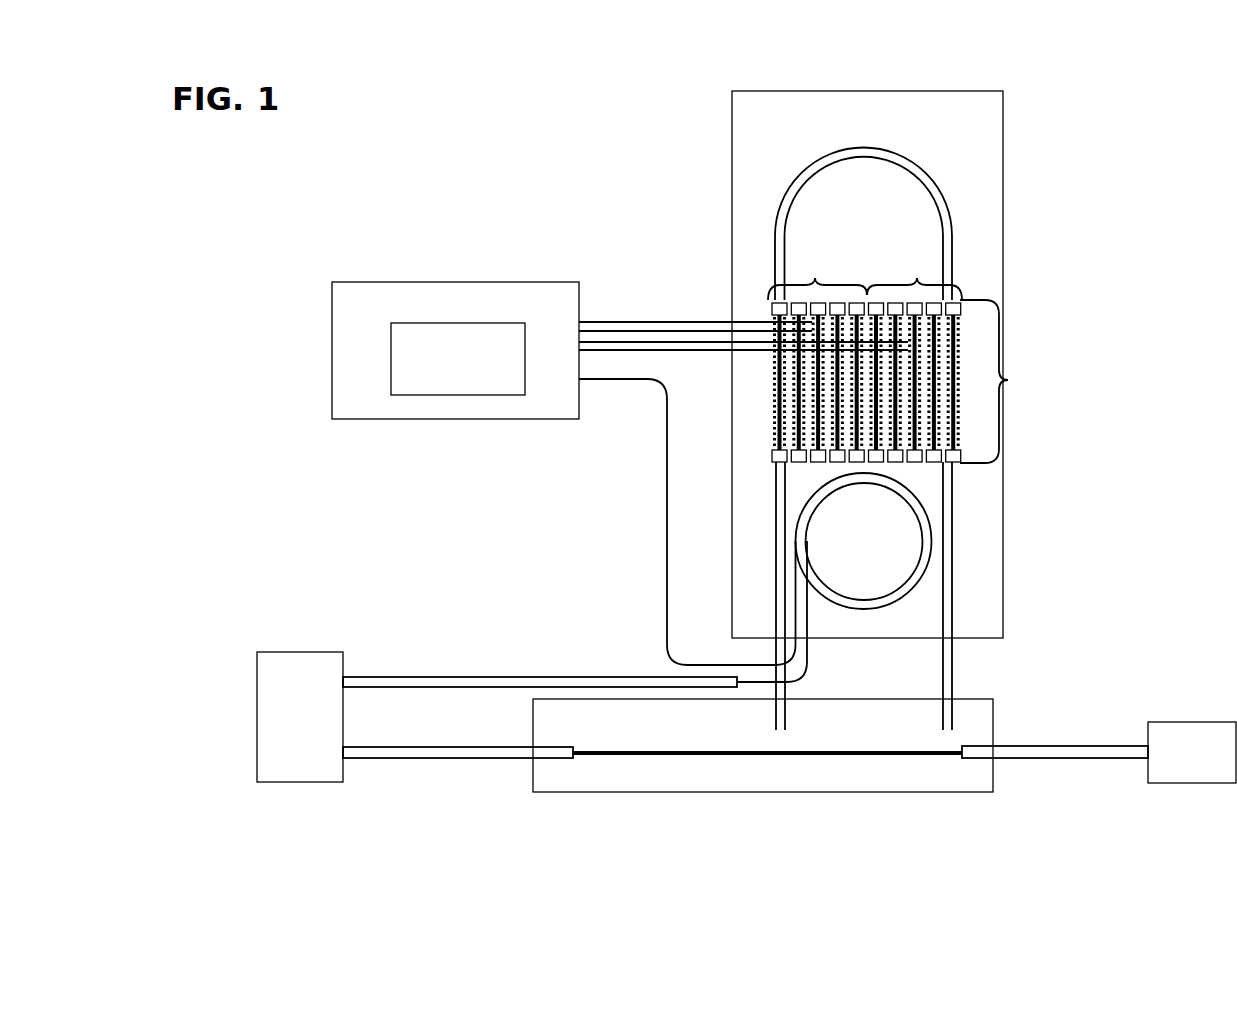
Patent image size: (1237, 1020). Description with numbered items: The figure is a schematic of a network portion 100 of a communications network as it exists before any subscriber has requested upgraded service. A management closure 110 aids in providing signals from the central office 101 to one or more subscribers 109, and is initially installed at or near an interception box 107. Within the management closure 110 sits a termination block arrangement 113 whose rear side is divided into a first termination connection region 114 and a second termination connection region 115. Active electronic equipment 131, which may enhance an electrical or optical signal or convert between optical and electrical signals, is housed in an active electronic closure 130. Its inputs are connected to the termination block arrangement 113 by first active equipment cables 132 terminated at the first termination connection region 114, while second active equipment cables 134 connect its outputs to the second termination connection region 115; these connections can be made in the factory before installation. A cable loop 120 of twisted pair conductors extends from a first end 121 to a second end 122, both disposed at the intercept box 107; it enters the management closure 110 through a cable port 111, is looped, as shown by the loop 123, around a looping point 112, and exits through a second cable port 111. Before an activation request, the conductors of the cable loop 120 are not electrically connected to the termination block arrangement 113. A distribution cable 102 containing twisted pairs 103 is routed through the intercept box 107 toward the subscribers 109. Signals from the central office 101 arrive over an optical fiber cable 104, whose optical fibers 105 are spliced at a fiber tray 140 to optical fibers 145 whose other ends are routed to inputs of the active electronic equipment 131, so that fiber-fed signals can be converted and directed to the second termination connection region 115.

The network portion 100 is at (1143, 343).
The central office 101 is at (277, 732).
The distribution cable 102 is at (1052, 762).
The twisted pairs 103 is at (640, 756).
The optical fiber cable 104 is at (435, 677).
The optical fibers 105 is at (808, 664).
The interception box 107 is at (848, 792).
The subscriber 109 is at (1216, 763).
The management closure 110 is at (731, 142).
The cable port 111 is at (952, 640).
The looping point 112 is at (862, 160).
The termination block arrangement 113 is at (913, 360).
The first termination connection region 114 is at (817, 359).
The second termination connection region 115 is at (914, 359).
The cable loop 120 is at (960, 537).
The first end 121 is at (778, 731).
The second end 122 is at (945, 731).
The loop 123 is at (905, 150).
The active electronic closure 130 is at (430, 282).
The active electronic equipment 131 is at (435, 372).
The first active equipment cables 132 is at (640, 320).
The second active equipment cables 134 is at (690, 353).
The fiber tray 140 is at (890, 555).
The optical fibers 145 is at (667, 540).